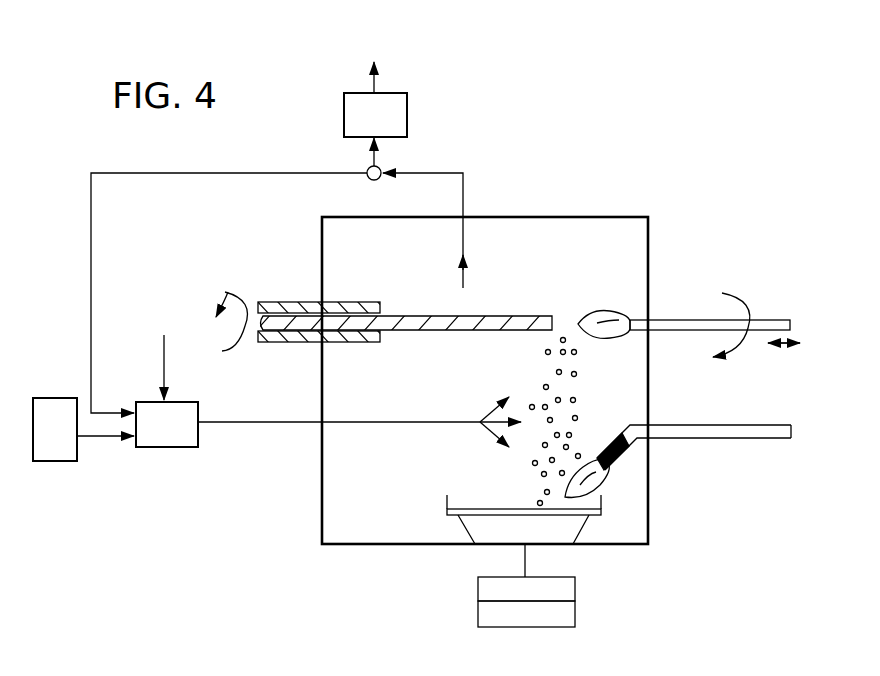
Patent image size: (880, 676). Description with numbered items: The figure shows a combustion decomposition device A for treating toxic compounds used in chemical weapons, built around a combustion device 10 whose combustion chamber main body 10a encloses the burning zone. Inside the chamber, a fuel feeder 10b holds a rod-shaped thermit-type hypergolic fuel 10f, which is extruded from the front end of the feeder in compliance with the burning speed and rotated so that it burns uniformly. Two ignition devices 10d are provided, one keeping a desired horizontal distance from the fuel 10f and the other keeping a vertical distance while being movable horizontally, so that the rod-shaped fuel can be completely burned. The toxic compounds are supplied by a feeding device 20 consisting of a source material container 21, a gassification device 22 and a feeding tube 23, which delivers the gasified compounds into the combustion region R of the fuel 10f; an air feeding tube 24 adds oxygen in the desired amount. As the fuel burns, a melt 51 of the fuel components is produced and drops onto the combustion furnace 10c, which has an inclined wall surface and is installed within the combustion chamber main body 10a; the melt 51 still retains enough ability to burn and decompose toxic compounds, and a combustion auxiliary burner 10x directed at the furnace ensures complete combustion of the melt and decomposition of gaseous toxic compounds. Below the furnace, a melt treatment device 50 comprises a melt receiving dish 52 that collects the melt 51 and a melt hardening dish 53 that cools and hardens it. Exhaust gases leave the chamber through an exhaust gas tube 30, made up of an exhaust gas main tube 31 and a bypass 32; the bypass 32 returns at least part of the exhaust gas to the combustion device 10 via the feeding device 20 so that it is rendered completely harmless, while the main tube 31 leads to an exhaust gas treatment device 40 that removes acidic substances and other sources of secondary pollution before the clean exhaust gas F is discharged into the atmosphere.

The combustion device 10 is at (664, 251).
The combustion chamber main body 10a is at (648, 266).
The fuel feeder 10b is at (273, 302).
The combustion furnace 10c is at (590, 492).
The ignition device 10d is at (660, 331).
The thermit-type hypergolic fuel 10f is at (295, 323).
The combustion auxiliary burner 10x is at (755, 440).
The feeding device 20 is at (136, 466).
The source material container 21 is at (55, 462).
The gassification device 22 is at (173, 448).
The feeding tube 23 is at (262, 425).
The air feeding tube 24 is at (164, 361).
The exhaust gas tube 30 is at (453, 167).
The exhaust gas main tube 31 is at (463, 192).
The bypass 32 is at (91, 210).
The exhaust gas treatment device 40 is at (424, 117).
The melt treatment device 50 is at (577, 531).
The melt 51 is at (577, 398).
The melt receiving dish 52 is at (570, 588).
The melt hardening dish 53 is at (570, 615).
The combustion decomposition device A is at (659, 217).
The clean exhaust gas F is at (389, 86).
The combustion region R is at (596, 426).